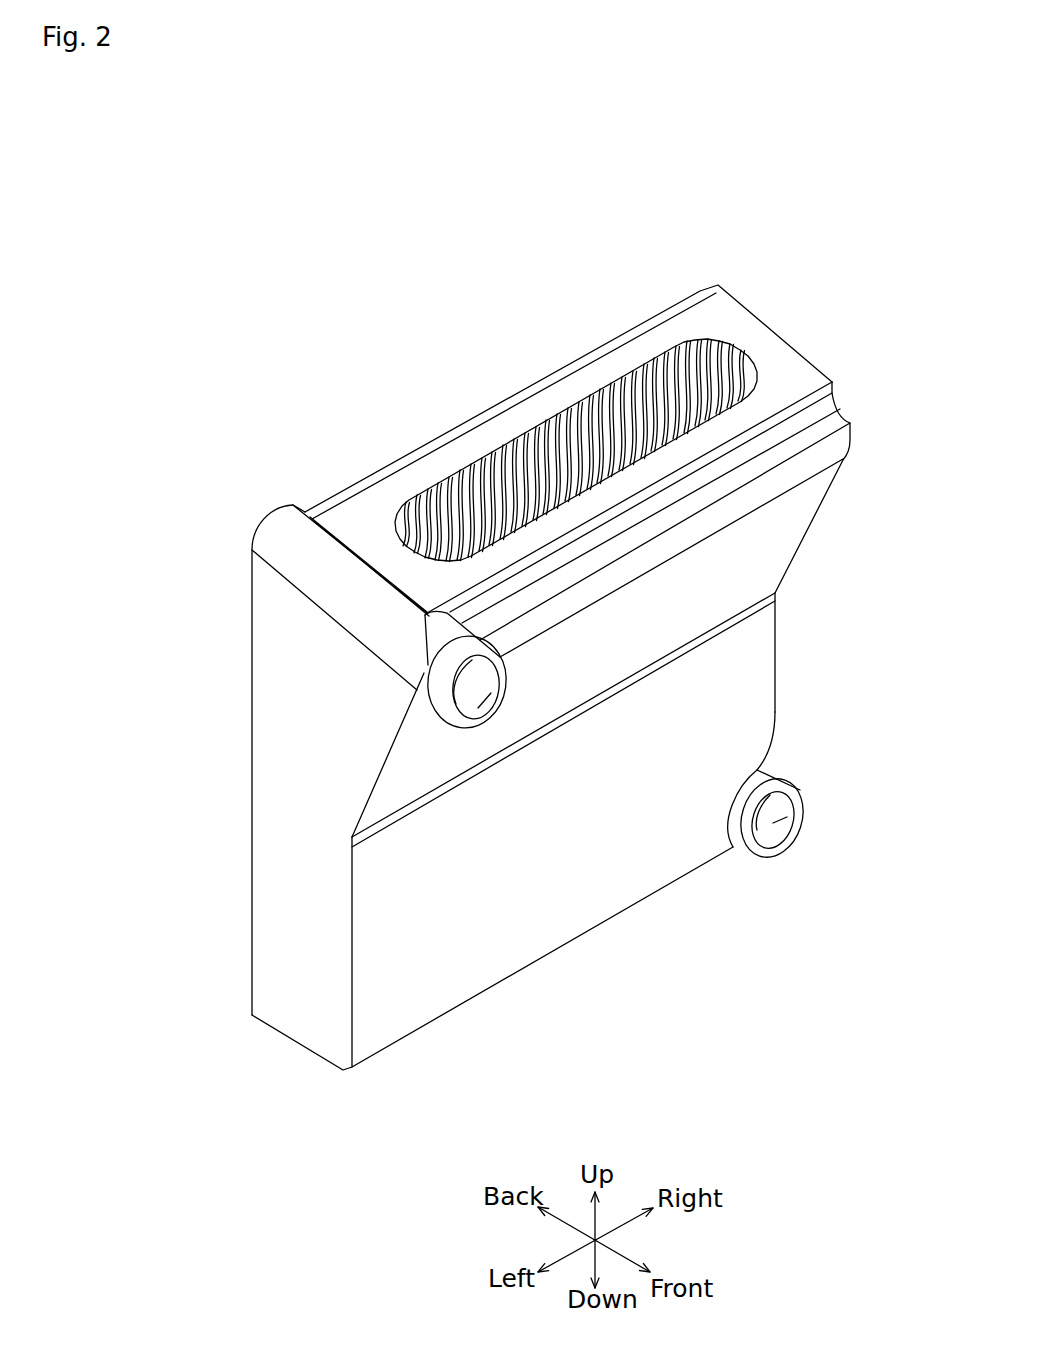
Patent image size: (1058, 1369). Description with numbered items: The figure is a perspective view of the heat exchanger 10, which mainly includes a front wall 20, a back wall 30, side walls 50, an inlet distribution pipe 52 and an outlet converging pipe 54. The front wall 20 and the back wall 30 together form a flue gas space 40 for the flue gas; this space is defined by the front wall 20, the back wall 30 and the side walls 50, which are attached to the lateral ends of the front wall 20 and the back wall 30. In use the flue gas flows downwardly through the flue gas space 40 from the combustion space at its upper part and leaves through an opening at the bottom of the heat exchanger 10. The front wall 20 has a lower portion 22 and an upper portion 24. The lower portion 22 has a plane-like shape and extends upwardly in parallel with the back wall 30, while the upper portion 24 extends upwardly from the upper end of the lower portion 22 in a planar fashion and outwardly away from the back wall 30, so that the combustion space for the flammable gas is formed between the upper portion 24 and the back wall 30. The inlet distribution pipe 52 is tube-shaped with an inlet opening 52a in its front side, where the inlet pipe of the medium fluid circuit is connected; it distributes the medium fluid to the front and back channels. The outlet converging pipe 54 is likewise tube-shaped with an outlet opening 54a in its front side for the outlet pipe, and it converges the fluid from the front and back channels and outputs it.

The heat exchanger 10 is at (750, 245).
The front wall 20 is at (605, 948).
The lower portion 22 is at (512, 945).
The upper portion 24 is at (758, 565).
The back wall 30 is at (390, 447).
The flue gas space 40 is at (627, 407).
The side walls 50 is at (287, 1000).
The inlet distribution pipe 52 is at (787, 777).
The inlet opening 52a is at (768, 827).
The outlet converging pipe 54 is at (430, 699).
The outlet opening 54a is at (477, 707).